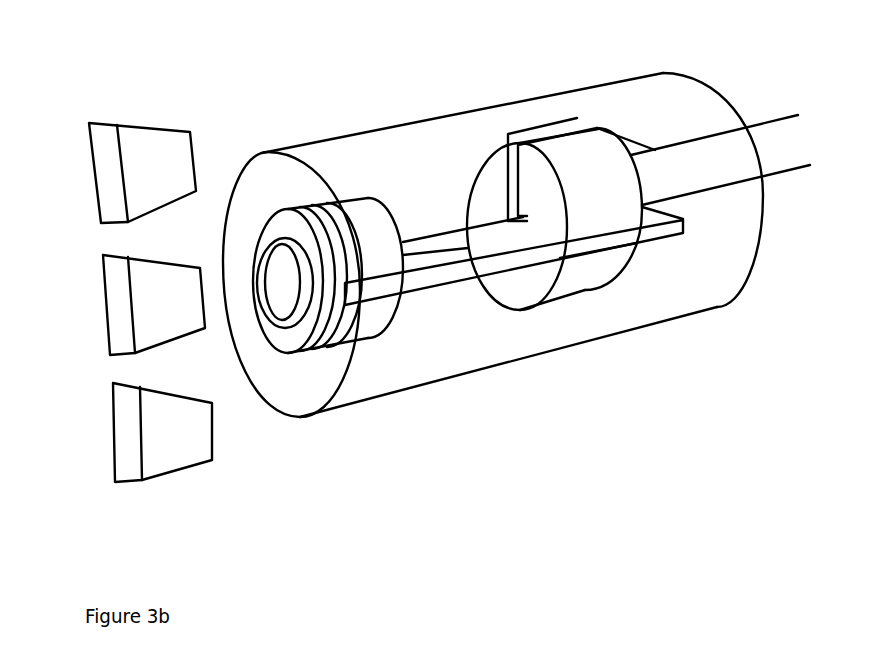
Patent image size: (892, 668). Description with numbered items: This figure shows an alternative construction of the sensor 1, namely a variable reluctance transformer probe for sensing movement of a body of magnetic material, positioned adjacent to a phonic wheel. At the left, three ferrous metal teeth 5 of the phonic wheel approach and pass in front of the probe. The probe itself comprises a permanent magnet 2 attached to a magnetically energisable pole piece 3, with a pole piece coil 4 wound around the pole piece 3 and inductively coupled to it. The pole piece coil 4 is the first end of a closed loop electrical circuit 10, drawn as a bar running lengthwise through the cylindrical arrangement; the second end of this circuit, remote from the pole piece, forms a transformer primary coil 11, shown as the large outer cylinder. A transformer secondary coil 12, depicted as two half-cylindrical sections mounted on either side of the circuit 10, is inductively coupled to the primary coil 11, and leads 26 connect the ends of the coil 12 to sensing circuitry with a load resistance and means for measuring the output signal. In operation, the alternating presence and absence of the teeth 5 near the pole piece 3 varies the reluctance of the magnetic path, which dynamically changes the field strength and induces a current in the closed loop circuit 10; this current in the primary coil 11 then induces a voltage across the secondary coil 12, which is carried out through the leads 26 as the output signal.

The sensor 1 is at (527, 273).
The permanent magnet 2 is at (367, 217).
The pole piece 3 is at (278, 285).
The pole piece coil 4 is at (303, 337).
The ferrous metal teeth 5 is at (157, 302).
The closed loop electrical circuit 10 is at (447, 290).
The transformer primary coil 11 is at (712, 253).
The transformer secondary coil 12 is at (587, 162).
The leads 26 is at (568, 120).